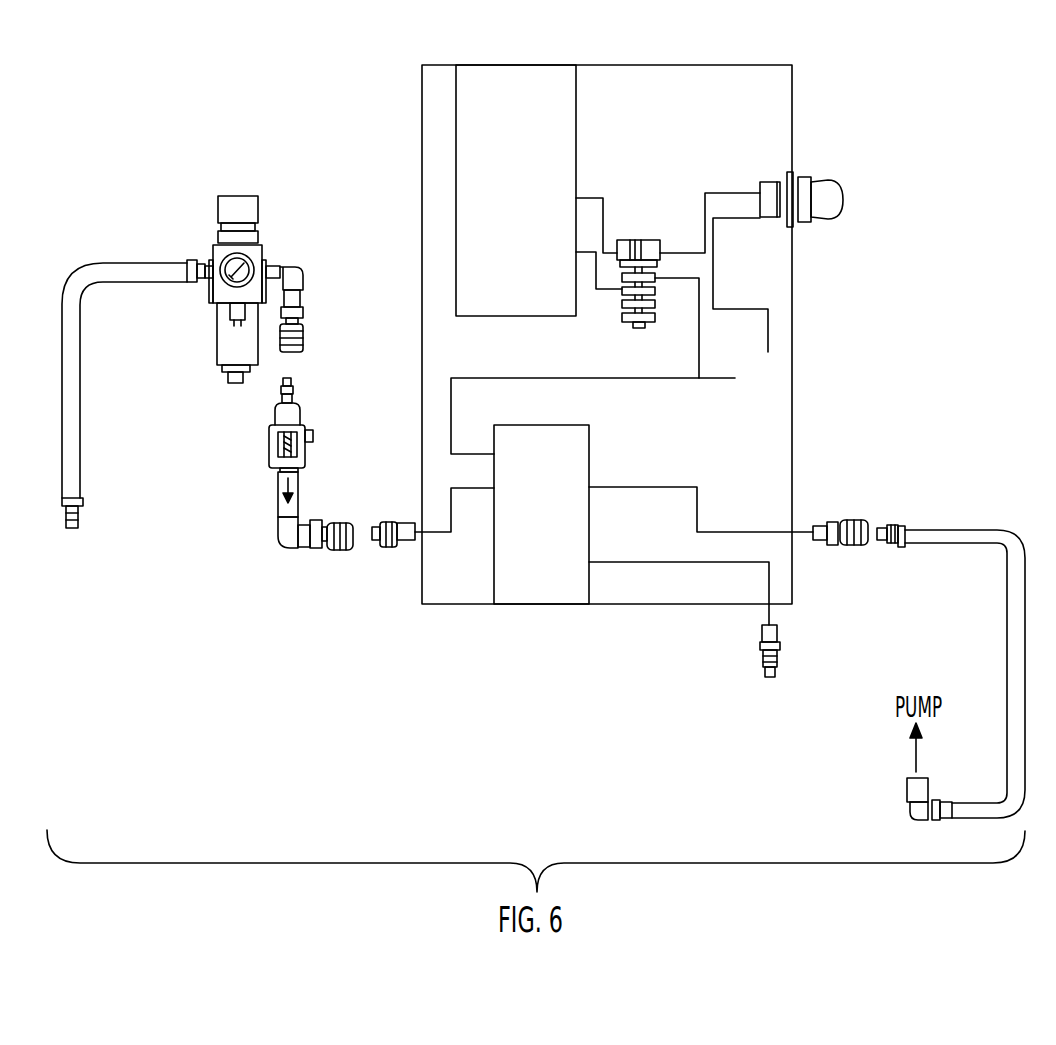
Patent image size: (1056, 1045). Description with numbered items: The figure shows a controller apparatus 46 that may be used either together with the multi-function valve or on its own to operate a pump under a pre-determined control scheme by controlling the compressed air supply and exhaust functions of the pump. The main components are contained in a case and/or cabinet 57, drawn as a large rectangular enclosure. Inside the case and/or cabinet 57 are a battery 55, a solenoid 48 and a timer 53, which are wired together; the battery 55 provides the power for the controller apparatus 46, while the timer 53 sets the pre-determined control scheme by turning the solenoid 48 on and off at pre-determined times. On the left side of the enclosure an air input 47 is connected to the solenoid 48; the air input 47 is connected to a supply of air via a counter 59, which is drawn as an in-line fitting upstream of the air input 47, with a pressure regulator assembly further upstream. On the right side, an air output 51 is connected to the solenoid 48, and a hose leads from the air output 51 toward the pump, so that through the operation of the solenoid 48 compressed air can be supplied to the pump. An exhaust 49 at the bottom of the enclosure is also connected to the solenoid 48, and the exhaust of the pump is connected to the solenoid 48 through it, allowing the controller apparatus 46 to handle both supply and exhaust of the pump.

The controller apparatus 46 is at (868, 171).
The air input 47 is at (404, 541).
The solenoid 48 is at (531, 590).
The exhaust 49 is at (761, 631).
The air output 51 is at (872, 524).
The timer 53 is at (793, 367).
The battery 55 is at (577, 93).
The case and/or cabinet 57 is at (793, 303).
The counter 59 is at (268, 460).